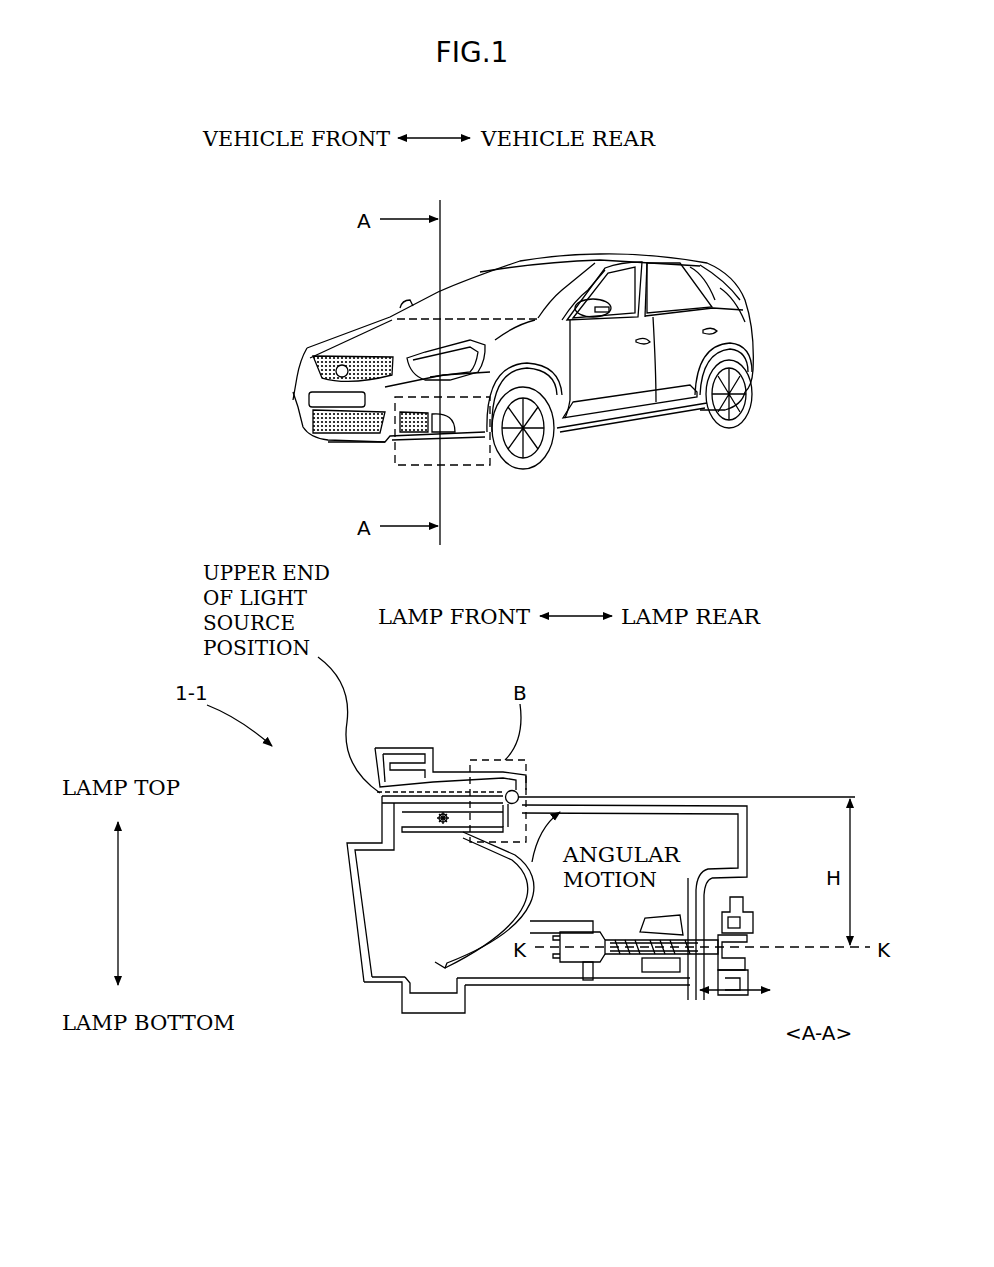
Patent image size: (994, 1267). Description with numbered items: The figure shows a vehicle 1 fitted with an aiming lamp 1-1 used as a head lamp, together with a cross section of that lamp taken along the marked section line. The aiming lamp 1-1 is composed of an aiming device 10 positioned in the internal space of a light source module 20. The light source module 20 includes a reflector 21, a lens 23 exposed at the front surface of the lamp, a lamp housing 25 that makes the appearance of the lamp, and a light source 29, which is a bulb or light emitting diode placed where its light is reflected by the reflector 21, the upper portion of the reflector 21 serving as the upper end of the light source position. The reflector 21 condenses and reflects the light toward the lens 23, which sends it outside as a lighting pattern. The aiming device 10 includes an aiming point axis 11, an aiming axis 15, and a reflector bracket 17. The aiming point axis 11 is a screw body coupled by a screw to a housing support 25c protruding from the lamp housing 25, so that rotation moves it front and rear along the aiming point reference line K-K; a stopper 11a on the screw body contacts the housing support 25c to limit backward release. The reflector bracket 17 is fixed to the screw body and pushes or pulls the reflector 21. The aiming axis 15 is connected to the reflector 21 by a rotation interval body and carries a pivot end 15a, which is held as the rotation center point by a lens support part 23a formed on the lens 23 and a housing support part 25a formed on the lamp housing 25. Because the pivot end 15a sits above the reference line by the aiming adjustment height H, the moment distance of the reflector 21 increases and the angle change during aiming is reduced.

The vehicle 1 is at (575, 256).
The aiming lamp 1-1 is at (470, 467).
The aiming device 10 is at (632, 1100).
The aiming point axis 11 is at (628, 960).
The stopper 11a is at (630, 955).
The aiming axis 15 is at (496, 806).
The pivot end 15a is at (528, 793).
The reflector bracket 17 is at (566, 965).
The light source module 20 is at (250, 842).
The reflector 21 is at (440, 960).
The lens 23 is at (372, 845).
The lens support part 23a is at (444, 852).
The lamp housing 25 is at (405, 998).
The housing support part 25a is at (505, 775).
The housing support 25c is at (676, 950).
The light source 29 is at (381, 823).